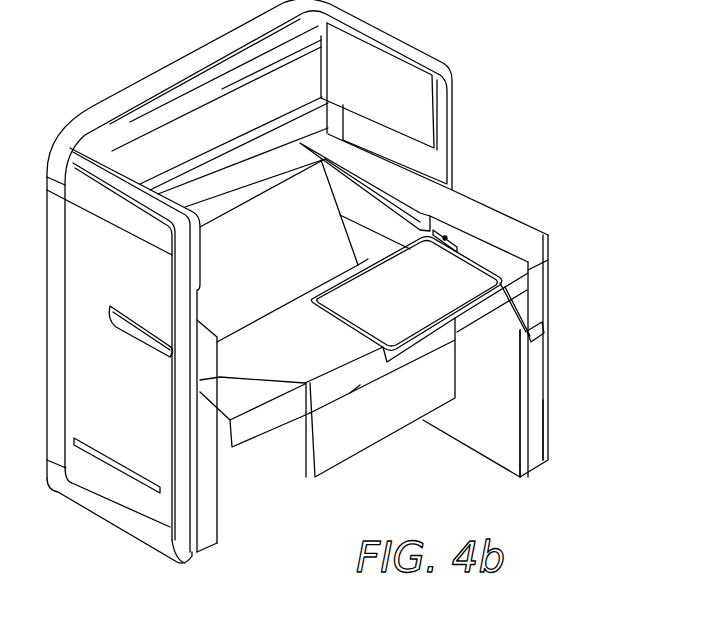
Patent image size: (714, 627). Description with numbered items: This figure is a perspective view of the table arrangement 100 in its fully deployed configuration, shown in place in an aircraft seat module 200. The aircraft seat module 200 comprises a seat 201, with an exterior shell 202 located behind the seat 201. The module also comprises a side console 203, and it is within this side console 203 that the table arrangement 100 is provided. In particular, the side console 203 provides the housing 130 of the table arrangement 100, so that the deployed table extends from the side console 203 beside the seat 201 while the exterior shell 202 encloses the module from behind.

The aircraft seat module 200 is at (336, 281).
The exterior shell 202 is at (373, 60).
The seat 201 is at (284, 370).
The side console 203 is at (540, 397).
The housing 130 is at (541, 272).
The table arrangement 100 is at (468, 290).